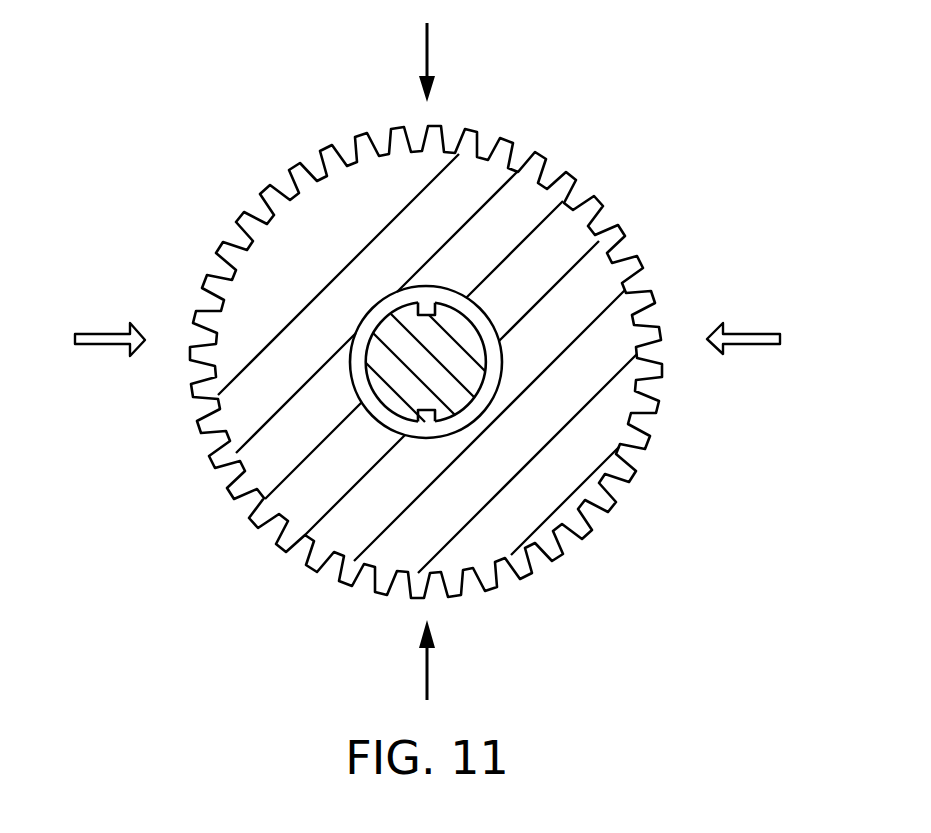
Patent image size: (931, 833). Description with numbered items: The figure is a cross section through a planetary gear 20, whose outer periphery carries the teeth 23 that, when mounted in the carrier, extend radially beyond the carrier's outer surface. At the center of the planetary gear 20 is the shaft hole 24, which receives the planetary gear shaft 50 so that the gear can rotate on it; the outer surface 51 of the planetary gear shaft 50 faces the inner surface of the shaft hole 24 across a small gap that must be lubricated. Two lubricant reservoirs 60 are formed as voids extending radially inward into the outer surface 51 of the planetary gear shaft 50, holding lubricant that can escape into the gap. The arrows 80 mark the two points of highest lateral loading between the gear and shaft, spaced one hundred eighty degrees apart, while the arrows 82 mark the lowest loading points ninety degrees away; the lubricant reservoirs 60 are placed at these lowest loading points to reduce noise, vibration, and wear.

The planetary gear 20 is at (479, 362).
The teeth 23 is at (730, 431).
The shaft hole 24 is at (462, 433).
The planetary gear shaft 50 is at (400, 337).
The outer surface 51 is at (487, 368).
The lubricant reservoirs 60 is at (427, 417).
The arrows 80 is at (750, 334).
The arrows 82 is at (478, 693).